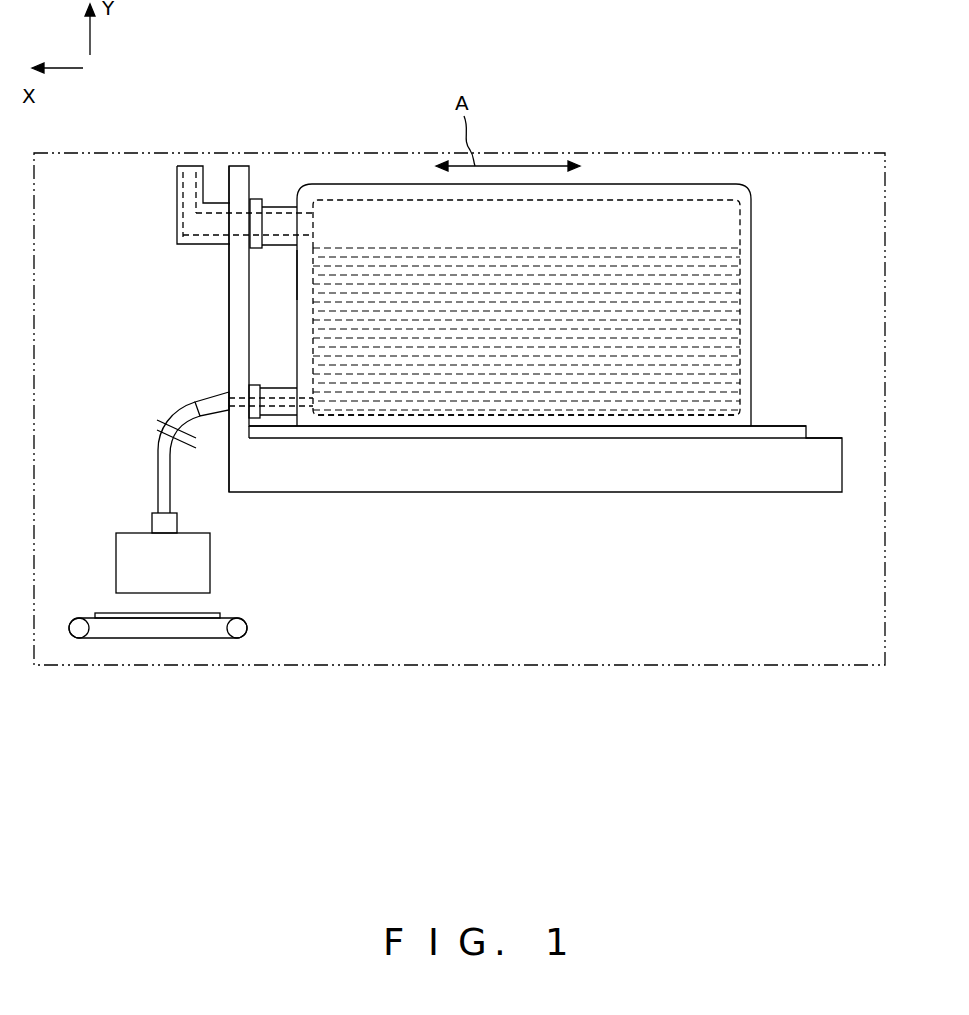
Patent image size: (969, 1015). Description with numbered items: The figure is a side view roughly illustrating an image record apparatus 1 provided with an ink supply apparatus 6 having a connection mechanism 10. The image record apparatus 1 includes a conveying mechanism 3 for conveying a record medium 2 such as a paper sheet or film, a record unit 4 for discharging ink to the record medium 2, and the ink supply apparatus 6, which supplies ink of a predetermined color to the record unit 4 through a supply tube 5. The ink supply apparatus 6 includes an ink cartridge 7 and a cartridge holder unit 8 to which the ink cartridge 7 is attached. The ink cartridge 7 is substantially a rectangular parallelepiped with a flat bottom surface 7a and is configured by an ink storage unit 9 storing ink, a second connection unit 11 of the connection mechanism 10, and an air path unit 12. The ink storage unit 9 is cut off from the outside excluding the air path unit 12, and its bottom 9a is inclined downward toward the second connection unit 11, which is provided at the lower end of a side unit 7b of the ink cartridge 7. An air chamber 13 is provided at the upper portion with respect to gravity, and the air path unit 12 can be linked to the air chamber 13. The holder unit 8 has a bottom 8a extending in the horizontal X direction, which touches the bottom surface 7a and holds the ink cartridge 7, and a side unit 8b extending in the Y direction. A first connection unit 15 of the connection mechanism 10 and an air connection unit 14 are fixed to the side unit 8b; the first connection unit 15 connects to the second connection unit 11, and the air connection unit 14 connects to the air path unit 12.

The image record apparatus 1 is at (544, 150).
The record medium 2 is at (223, 613).
The conveying mechanism 3 is at (256, 614).
The record unit 4 is at (234, 544).
The supply tube 5 is at (158, 475).
The ink supply apparatus 6 is at (491, 346).
The ink cartridge 7 is at (476, 320).
The bottom surface 7a is at (562, 427).
The side unit 7b is at (297, 272).
The cartridge holder unit 8 is at (491, 358).
The bottom 8a is at (427, 430).
The side unit 8b is at (229, 345).
The ink storage unit 9 is at (725, 348).
The bottom 9a is at (675, 418).
The connection mechanism 10 is at (265, 436).
The second connection unit 11 is at (268, 386).
The air path unit 12 is at (277, 205).
The air chamber 13 is at (678, 222).
The air connection unit 14 is at (250, 212).
The first connection unit 15 is at (248, 392).